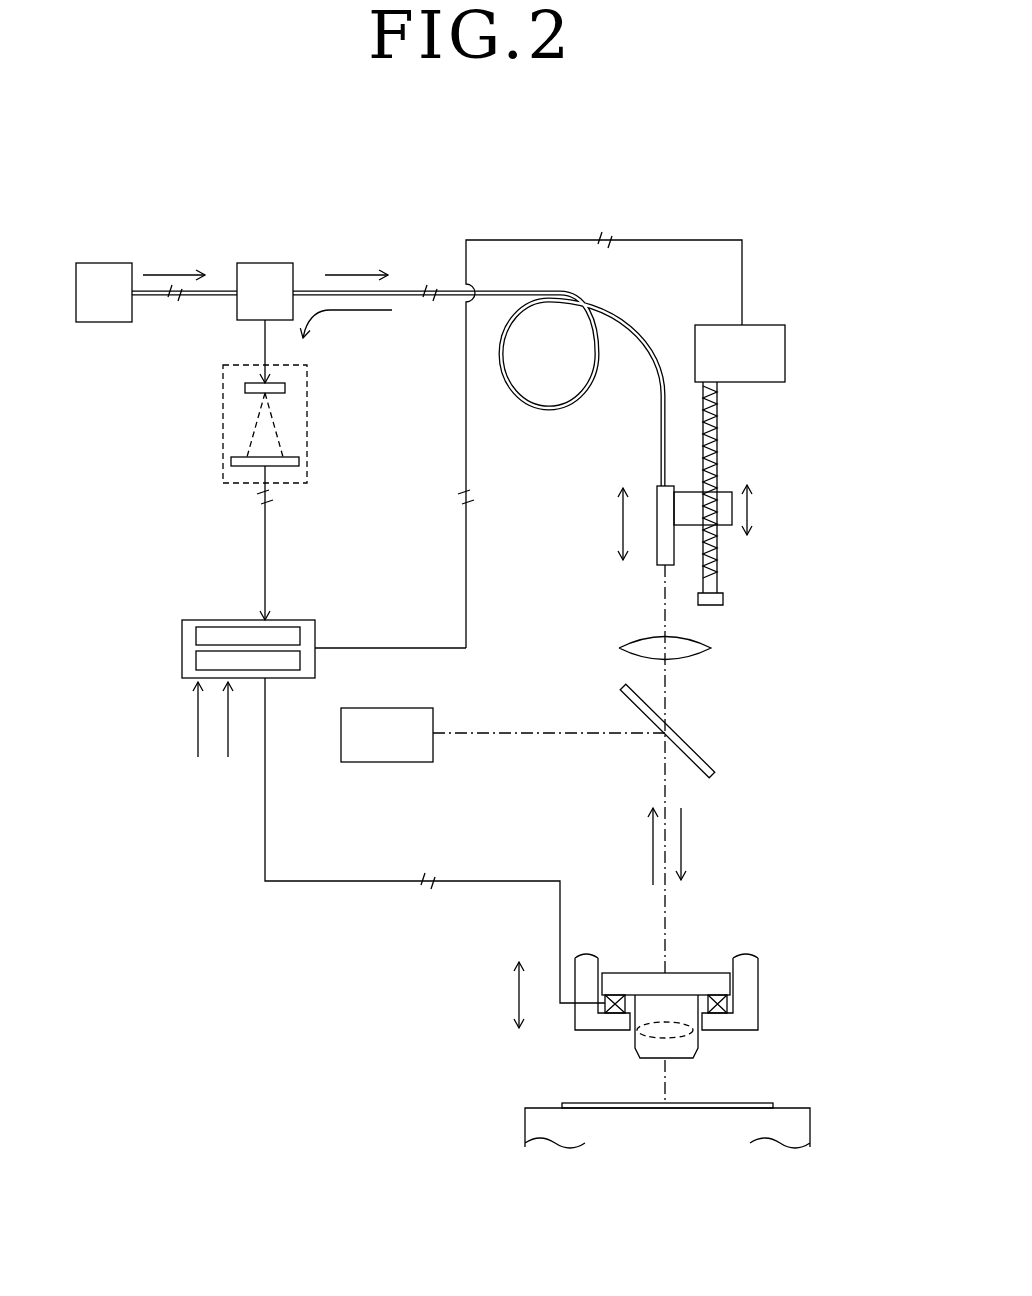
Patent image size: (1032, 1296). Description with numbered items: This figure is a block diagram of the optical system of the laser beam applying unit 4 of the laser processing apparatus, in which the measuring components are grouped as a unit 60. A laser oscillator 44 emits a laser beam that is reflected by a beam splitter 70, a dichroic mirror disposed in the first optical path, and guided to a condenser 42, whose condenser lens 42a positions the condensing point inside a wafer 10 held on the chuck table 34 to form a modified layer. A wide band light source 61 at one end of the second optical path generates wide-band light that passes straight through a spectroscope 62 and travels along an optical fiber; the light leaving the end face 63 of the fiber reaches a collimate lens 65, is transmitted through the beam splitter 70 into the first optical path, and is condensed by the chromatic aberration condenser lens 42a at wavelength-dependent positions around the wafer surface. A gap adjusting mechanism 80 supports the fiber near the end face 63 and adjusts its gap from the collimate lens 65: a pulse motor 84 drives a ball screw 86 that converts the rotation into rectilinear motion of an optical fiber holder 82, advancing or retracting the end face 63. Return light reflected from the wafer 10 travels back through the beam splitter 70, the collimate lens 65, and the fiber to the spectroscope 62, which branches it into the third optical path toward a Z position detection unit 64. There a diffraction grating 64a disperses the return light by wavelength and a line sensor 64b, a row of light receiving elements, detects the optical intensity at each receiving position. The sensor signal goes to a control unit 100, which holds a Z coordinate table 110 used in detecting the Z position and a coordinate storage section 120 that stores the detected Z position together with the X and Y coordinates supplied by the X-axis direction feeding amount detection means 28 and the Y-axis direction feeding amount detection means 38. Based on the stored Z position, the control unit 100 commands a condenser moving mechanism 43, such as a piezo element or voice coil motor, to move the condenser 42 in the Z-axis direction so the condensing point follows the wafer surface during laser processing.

The laser beam applying unit 4 is at (440, 823).
The wafer 10 is at (760, 1105).
The X-axis direction feeding amount detection means 28 is at (200, 732).
The chuck table 34 is at (815, 1125).
The Y-axis direction feeding amount detection means 38 is at (228, 732).
The condenser 42 is at (628, 1050).
The condenser lens 42a is at (690, 1032).
The condenser moving mechanism 43 is at (612, 1025).
The laser oscillator 44 is at (385, 708).
The measuring unit 60 is at (445, 225).
The wide band light source 61 is at (101, 322).
The spectroscope 62 is at (265, 262).
The end face 63 is at (664, 568).
The Z position detection unit 64 is at (223, 432).
The diffraction grating 64a is at (285, 389).
The line sensor 64b is at (299, 462).
The collimate lens 65 is at (700, 658).
The beam splitter 70 is at (712, 760).
The gap adjusting mechanism 80 is at (805, 420).
The optical fiber holder 82 is at (684, 533).
The pulse motor 84 is at (760, 325).
The ball screw 86 is at (717, 440).
The control unit 100 is at (205, 620).
The Z coordinate table 110 is at (197, 640).
The coordinate storage section 120 is at (197, 663).